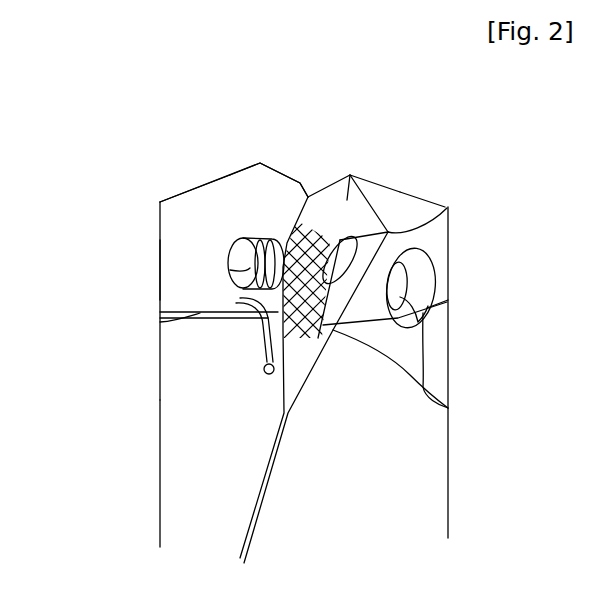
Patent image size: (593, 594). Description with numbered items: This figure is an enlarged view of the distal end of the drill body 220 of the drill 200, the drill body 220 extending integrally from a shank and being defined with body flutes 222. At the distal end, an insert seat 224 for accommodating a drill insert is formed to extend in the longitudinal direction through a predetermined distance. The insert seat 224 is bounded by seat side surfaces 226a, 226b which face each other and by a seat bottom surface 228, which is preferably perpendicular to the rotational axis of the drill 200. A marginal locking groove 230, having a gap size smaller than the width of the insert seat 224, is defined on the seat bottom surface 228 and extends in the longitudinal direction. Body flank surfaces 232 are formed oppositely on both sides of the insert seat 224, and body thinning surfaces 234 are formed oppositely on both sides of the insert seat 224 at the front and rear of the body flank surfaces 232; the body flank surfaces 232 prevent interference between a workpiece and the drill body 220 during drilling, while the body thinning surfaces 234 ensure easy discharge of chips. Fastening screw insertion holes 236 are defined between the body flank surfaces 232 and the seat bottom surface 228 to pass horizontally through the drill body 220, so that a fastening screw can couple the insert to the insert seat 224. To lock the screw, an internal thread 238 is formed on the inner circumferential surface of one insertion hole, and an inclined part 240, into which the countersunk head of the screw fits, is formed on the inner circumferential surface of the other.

The drill 200 is at (133, 441).
The drill body 220 is at (450, 343).
The body flutes 222 is at (180, 408).
The insert seat 224 is at (182, 222).
The seat side surface 226a is at (338, 178).
The seat side surface 226b is at (165, 267).
The seat bottom surface 228 is at (200, 313).
The marginal locking groove 230 is at (263, 354).
The body flank surfaces 232 is at (206, 184).
The body thinning surfaces 234 is at (282, 174).
The fastening screw insertion holes 236 is at (448, 407).
The internal thread 238 is at (240, 272).
The inclined part 240 is at (423, 281).